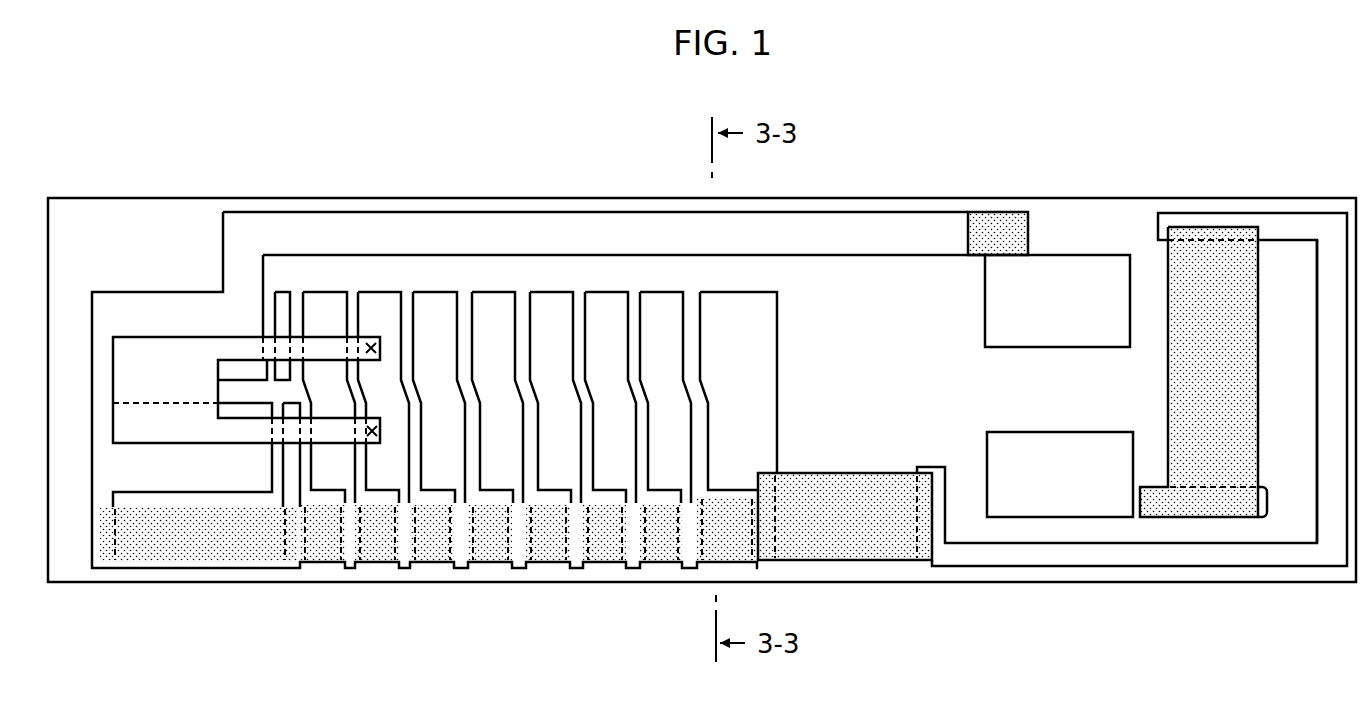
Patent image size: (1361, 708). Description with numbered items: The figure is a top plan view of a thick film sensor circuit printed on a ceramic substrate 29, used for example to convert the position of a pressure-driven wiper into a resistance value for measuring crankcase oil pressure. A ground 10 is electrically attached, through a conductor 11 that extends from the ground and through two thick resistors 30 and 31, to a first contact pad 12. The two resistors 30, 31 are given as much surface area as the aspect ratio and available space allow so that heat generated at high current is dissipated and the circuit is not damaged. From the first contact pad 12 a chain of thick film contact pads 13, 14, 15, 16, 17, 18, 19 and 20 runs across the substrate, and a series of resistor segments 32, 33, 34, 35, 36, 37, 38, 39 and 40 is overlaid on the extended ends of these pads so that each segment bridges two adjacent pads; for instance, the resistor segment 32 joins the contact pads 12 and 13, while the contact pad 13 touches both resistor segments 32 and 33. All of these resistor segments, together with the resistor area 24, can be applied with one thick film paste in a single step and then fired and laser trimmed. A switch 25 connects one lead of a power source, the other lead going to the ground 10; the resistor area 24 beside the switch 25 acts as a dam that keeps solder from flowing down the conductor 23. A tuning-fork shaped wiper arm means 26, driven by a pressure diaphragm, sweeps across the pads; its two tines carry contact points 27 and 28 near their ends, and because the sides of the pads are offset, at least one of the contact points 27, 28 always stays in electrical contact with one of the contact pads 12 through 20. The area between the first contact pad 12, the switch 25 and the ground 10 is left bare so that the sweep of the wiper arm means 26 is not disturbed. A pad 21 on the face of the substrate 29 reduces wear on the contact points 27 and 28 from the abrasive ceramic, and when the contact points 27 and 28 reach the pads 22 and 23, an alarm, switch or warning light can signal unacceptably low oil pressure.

The ground 10 is at (1072, 479).
The conductor 11 is at (1340, 402).
The first contact pad 12 is at (747, 402).
The contact pad 13 is at (675, 402).
The contact pad 14 is at (619, 402).
The contact pad 15 is at (563, 402).
The contact pad 16 is at (505, 402).
The contact pad 17 is at (448, 402).
The contact pad 18 is at (391, 402).
The contact pad 19 is at (336, 402).
The contact pad 20 is at (282, 459).
The pad 21 is at (291, 298).
The pad 22 is at (162, 474).
The conductor 23 is at (607, 244).
The resistor area 24 is at (1008, 240).
The switch 25 is at (1067, 317).
The wiper arm means 26 is at (173, 434).
The contact point 27 is at (373, 342).
The contact point 28 is at (376, 437).
The ceramic substrate 29 is at (1109, 196).
The resistor 30 is at (1223, 402).
The resistor 31 is at (858, 546).
The resistor segment 32 is at (736, 546).
The resistor segment 33 is at (670, 546).
The resistor segment 34 is at (614, 546).
The resistor segment 35 is at (557, 546).
The resistor segment 36 is at (499, 546).
The resistor segment 37 is at (441, 546).
The resistor segment 38 is at (386, 546).
The resistor segment 39 is at (331, 546).
The resistor segment 40 is at (200, 546).